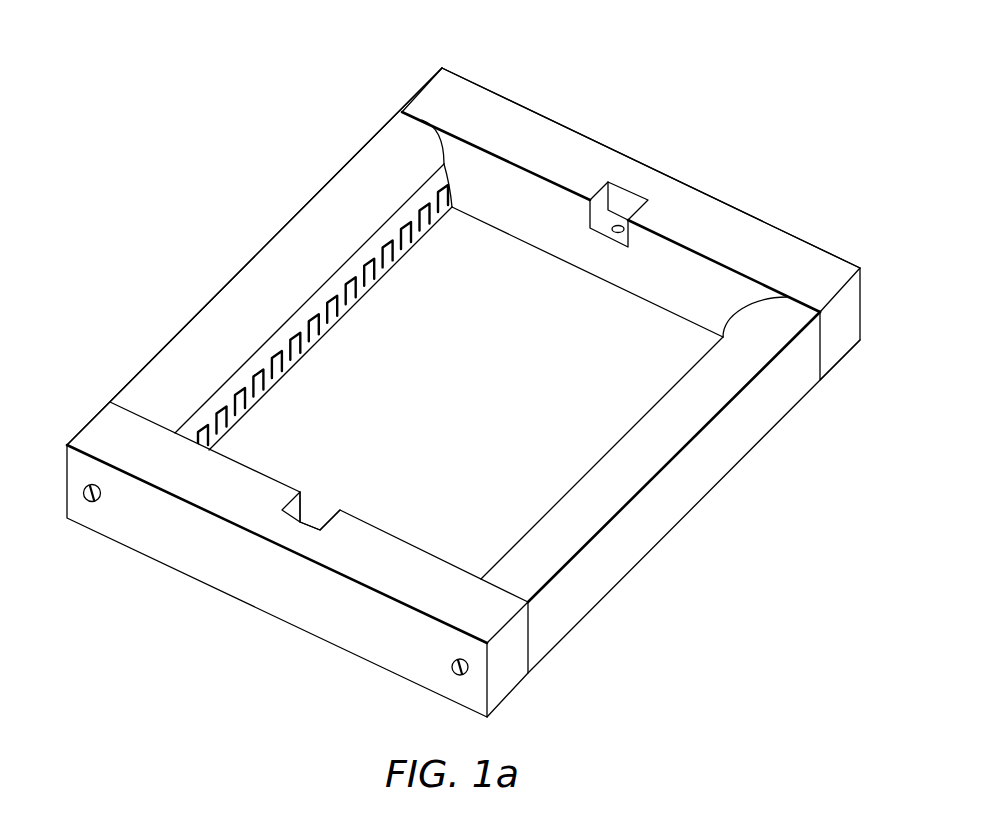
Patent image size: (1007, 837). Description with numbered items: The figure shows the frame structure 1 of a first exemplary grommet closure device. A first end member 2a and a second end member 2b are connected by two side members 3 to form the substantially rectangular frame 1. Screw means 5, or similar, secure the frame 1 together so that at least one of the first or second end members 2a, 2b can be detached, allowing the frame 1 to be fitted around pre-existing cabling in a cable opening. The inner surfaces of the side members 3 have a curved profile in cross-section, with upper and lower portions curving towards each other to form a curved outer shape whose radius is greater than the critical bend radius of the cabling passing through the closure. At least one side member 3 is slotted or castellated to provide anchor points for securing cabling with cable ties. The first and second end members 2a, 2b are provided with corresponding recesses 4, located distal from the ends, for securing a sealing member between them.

The frame structure 1 is at (378, 58).
The first end member 2a is at (522, 113).
The second end member 2b is at (187, 565).
The side member 3 is at (252, 267).
The recess 4 is at (625, 195).
The screw means 5 is at (87, 502).